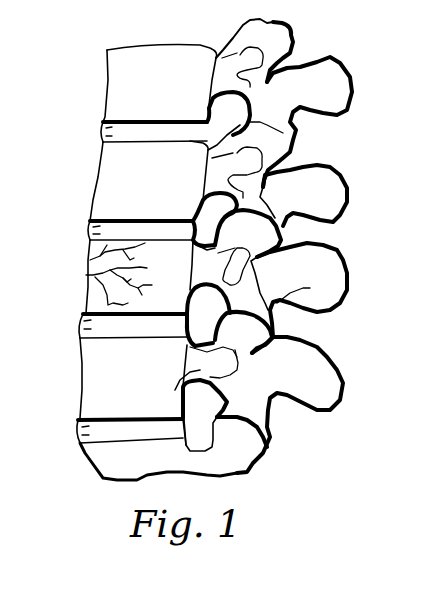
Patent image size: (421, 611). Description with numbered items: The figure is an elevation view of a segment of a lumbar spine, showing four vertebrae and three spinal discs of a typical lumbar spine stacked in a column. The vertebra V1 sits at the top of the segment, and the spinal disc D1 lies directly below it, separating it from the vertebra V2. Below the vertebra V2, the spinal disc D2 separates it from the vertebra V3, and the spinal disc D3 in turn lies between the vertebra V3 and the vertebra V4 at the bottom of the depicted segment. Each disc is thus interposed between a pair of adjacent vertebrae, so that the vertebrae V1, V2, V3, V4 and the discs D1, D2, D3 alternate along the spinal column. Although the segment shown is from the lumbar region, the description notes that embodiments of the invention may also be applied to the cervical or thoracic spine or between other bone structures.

The vertebra V1 is at (108, 80).
The spinal disc D1 is at (98, 133).
The vertebra V2 is at (98, 173).
The spinal disc D2 is at (87, 230).
The vertebra V3 is at (87, 273).
The spinal disc D3 is at (78, 326).
The vertebra V4 is at (82, 380).